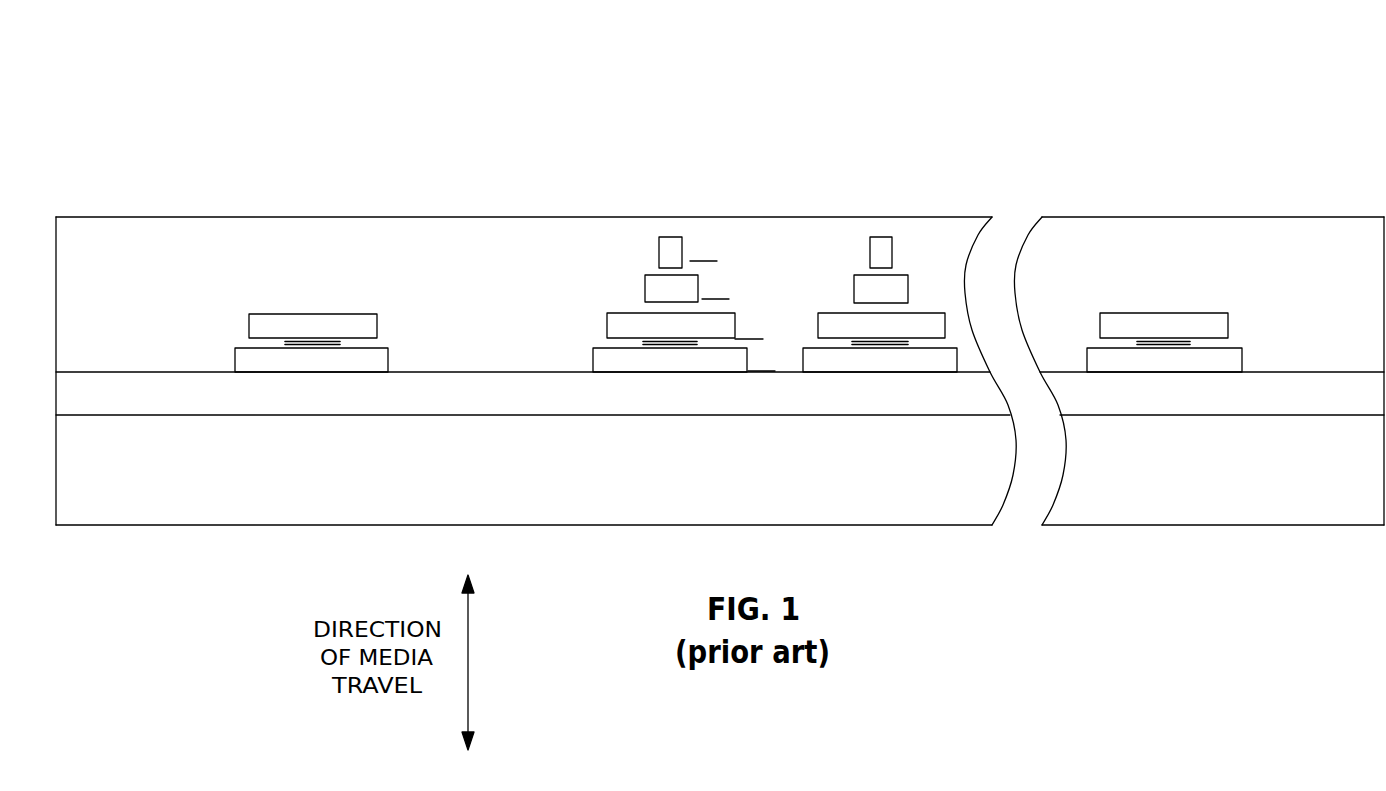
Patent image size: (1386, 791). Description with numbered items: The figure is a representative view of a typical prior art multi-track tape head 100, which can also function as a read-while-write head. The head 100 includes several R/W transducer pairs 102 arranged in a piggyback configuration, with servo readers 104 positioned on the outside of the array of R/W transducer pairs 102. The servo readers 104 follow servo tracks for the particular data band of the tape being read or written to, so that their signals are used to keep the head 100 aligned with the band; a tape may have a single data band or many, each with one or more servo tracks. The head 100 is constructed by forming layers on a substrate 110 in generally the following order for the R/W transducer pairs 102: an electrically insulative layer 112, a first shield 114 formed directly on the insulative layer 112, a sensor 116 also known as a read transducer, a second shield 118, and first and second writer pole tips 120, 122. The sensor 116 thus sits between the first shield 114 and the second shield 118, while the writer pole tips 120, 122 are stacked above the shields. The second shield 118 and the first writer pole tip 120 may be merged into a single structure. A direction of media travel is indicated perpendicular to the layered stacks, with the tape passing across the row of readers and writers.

The head 100 is at (105, 177).
The R/W transducer pairs 102 is at (817, 237).
The servo readers 104 is at (365, 253).
The substrate 110 is at (258, 482).
The electrically insulative layer 112 is at (258, 401).
The first shield (S1) 114 is at (593, 360).
The sensor 116 is at (668, 341).
The second shield (S2) 118 is at (607, 328).
The first writer pole tip (P1) 120 is at (645, 288).
The second writer pole tip (P2) 122 is at (659, 252).